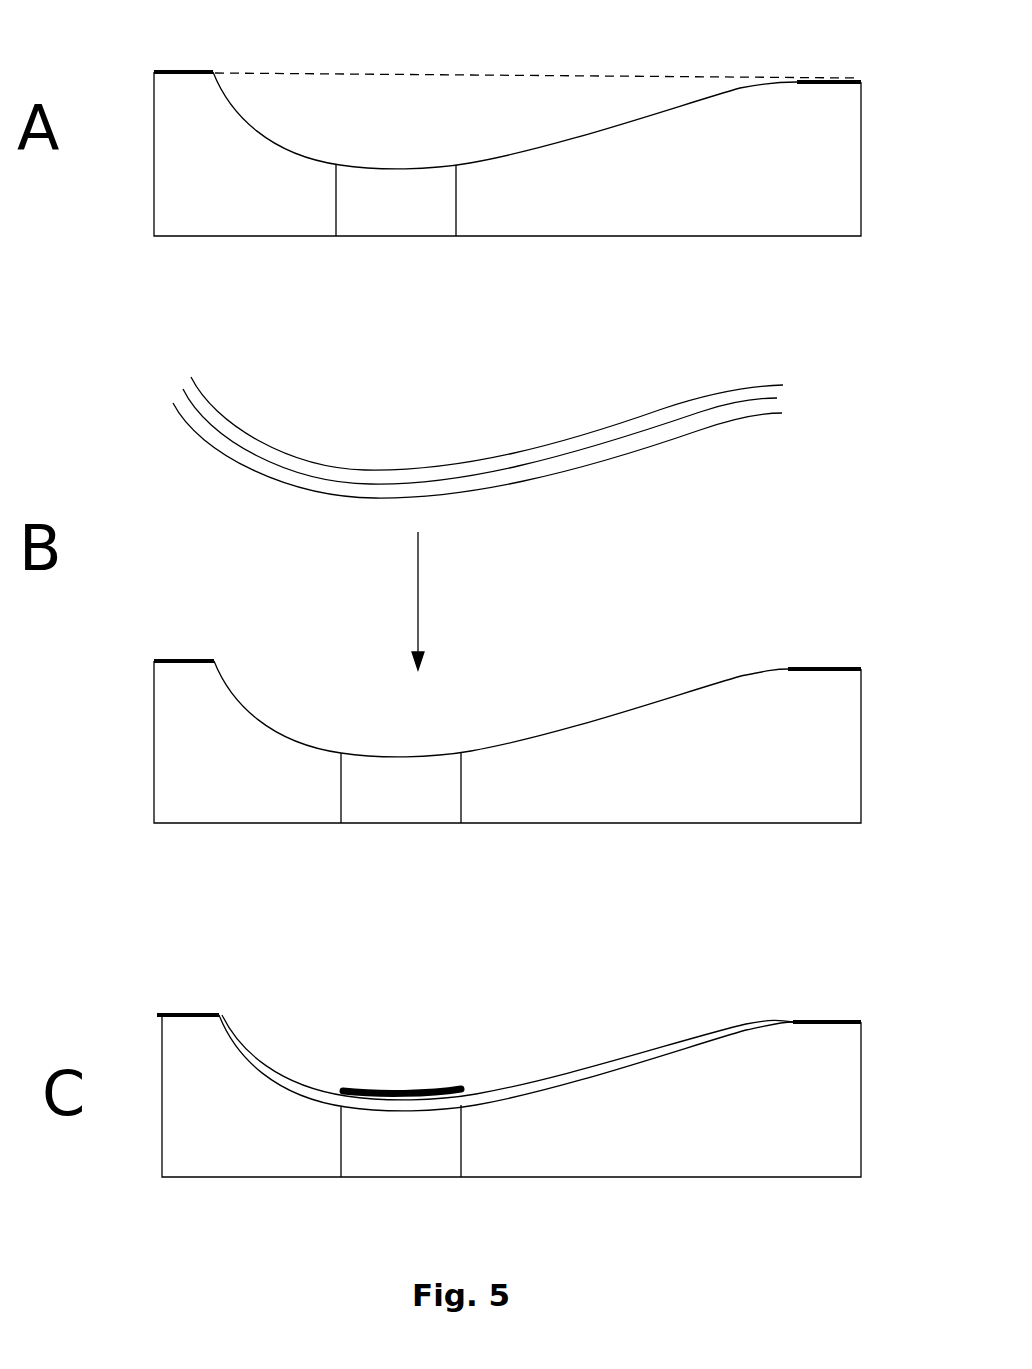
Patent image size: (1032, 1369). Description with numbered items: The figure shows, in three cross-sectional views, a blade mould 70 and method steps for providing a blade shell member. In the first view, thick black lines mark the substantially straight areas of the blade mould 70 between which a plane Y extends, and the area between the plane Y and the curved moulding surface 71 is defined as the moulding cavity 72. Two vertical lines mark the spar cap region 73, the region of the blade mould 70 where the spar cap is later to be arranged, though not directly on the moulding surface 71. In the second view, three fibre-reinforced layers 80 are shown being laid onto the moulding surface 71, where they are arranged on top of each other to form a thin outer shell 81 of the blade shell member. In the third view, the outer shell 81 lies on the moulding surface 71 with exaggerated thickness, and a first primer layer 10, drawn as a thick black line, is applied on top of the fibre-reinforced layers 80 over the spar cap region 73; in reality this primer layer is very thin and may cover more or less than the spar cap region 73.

In FIG. 5C, the first primer layer 10 is at (430, 1086).
In FIG. 5A, the blade mould 70 is at (848, 130).
In FIG. 5B, the blade mould 70 is at (861, 705).
In FIG. 5C, the blade mould 70 is at (861, 1059).
In FIG. 5A, the moulding surface 71 is at (725, 92).
In FIG. 5B, the moulding surface 71 is at (725, 680).
In FIG. 5C, the moulding surface 71 is at (702, 1040).
In FIG. 5A, the moulding cavity 72 is at (487, 118).
In FIG. 5A, the spar cap region 73 is at (413, 206).
In FIG. 5B, the spar cap region 73 is at (423, 803).
In FIG. 5C, the spar cap region 73 is at (412, 1147).
In FIG. 5B, the fibre-reinforced layers 80 is at (662, 409).
In FIG. 5C, the outer shell 81 is at (517, 1092).
In FIG. 5A, the plane Y is at (392, 73).